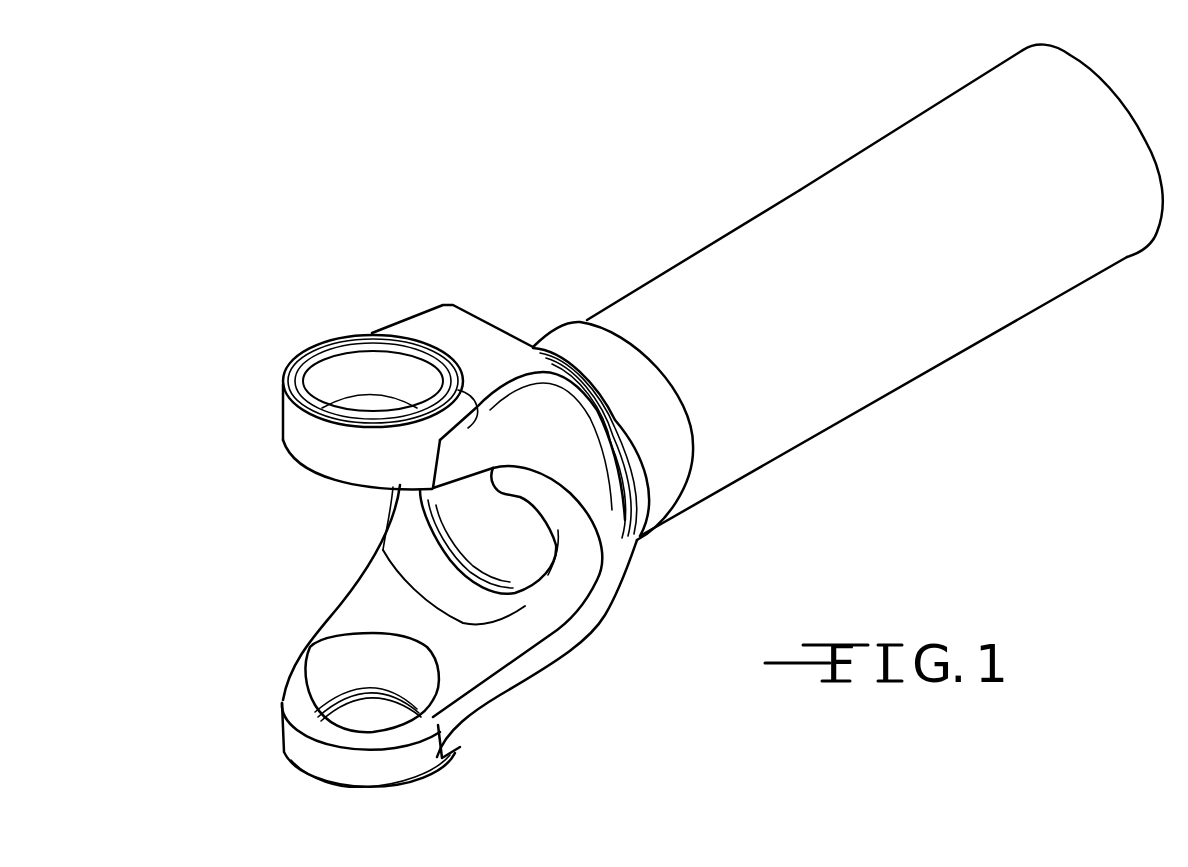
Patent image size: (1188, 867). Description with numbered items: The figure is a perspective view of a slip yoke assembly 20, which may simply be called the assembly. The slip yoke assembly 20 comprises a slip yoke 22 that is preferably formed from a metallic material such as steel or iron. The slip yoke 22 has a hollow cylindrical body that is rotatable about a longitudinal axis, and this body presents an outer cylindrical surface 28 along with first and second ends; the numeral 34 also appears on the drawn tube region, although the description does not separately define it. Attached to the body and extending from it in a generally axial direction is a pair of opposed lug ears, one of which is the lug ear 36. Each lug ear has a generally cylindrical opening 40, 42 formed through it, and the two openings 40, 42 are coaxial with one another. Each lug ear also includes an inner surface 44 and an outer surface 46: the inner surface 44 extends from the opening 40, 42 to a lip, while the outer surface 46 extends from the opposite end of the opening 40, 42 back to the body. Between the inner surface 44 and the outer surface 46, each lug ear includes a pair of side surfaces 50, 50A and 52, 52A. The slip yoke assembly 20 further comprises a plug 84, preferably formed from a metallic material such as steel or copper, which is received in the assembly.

The slip yoke assembly 20 is at (530, 212).
The slip yoke 22 is at (811, 411).
The outer cylindrical surface 28 is at (741, 242).
The outer surface of tube 34 is at (900, 142).
The lug ear 36 is at (422, 330).
The cylindrical opening 40 is at (380, 386).
The cylindrical opening 42 is at (382, 731).
The inner surface 44 is at (530, 622).
The outer surface 46 is at (608, 608).
The side surface 50 is at (500, 437).
The side surface 50A is at (362, 332).
The side surface 52 is at (497, 700).
The side surface 52A is at (317, 620).
The plug 84 is at (533, 523).